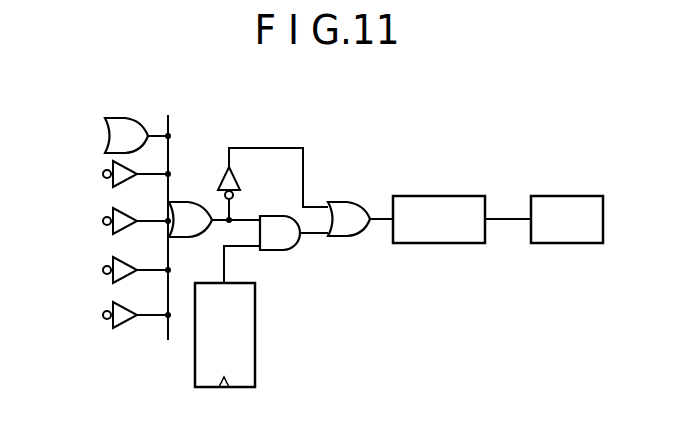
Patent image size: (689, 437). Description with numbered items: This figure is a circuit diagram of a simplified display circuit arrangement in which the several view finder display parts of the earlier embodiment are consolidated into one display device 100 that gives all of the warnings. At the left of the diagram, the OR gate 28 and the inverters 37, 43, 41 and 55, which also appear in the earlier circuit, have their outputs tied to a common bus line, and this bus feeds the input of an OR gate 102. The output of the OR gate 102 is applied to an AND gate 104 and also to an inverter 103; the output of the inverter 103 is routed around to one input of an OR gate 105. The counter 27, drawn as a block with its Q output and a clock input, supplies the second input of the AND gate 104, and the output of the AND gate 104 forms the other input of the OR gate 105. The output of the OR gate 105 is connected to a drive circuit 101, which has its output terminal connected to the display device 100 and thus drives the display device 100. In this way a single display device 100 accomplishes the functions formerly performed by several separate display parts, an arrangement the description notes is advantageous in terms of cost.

The OR gate 28 is at (140, 117).
The inverter 37 is at (103, 174).
The inverter 43 is at (103, 221).
The inverter 41 is at (103, 270).
The inverter 55 is at (103, 315).
The OR gate 102 is at (190, 200).
The inverter 103 is at (240, 176).
The AND gate 104 is at (278, 252).
The OR gate 105 is at (340, 204).
The drive circuit 101 is at (471, 195).
The display device 100 is at (590, 195).
The counter 27 is at (256, 340).